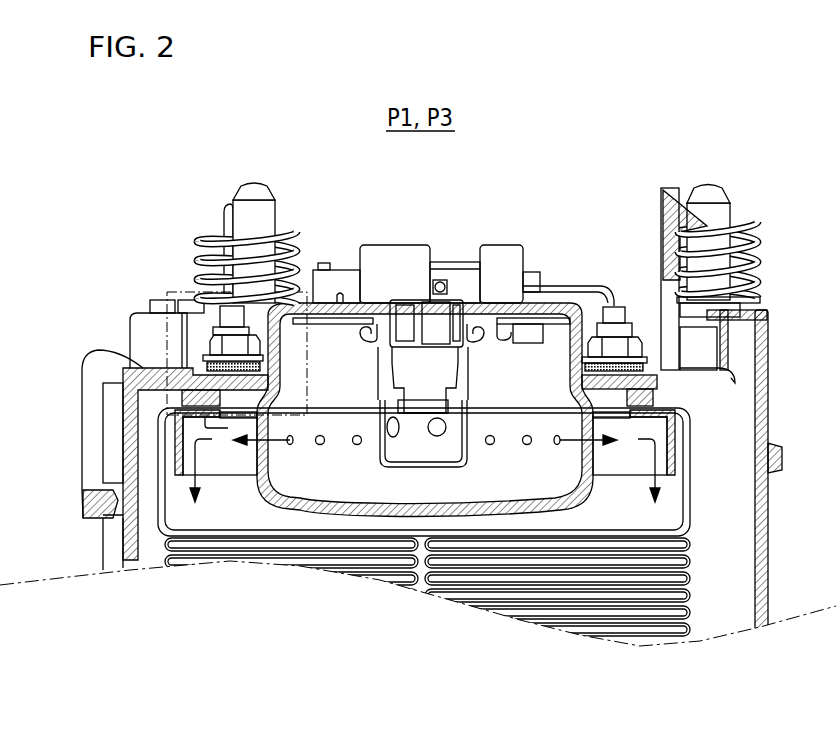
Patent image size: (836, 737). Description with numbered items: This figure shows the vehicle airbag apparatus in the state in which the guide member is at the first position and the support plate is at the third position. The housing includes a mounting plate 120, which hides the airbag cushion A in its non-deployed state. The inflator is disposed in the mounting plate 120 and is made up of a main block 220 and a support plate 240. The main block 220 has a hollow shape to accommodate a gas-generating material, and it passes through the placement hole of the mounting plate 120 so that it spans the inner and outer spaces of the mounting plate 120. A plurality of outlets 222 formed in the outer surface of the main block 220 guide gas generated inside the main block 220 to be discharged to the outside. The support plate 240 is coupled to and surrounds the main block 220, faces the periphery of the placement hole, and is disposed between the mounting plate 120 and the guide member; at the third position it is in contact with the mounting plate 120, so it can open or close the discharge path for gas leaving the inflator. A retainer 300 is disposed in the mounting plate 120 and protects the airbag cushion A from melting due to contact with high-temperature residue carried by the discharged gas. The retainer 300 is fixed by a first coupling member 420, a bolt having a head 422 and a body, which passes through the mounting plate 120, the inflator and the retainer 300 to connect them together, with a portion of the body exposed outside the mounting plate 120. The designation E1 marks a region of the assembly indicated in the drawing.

The mounting plate 120 is at (200, 398).
The main block 220 is at (295, 511).
The outlet 222 is at (490, 448).
The support plate 240 is at (200, 367).
The retainer 300 is at (177, 445).
The first coupling member 420 is at (226, 532).
The head 422 is at (228, 426).
The airbag cushion A is at (383, 567).
The electrode terminal region E1 is at (300, 287).